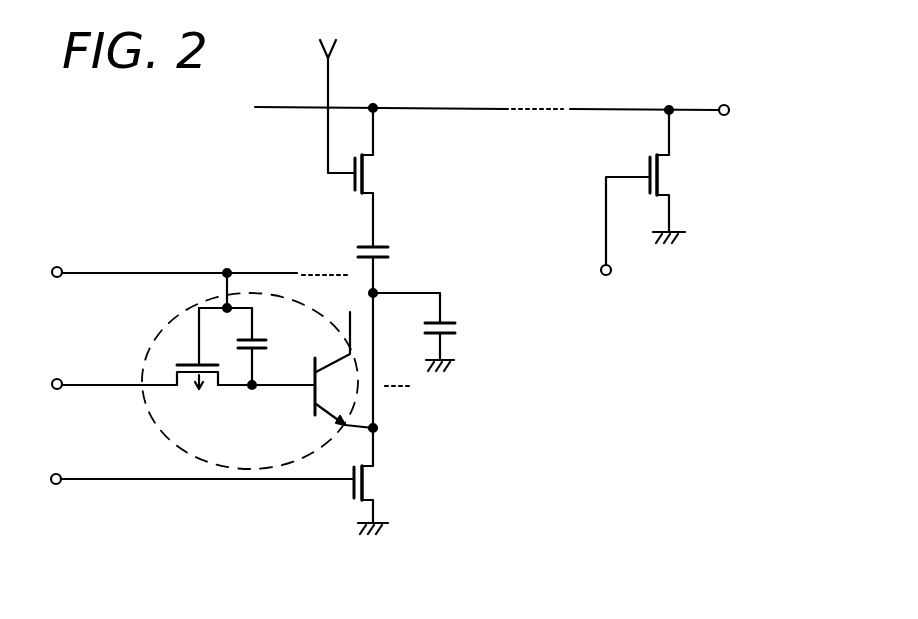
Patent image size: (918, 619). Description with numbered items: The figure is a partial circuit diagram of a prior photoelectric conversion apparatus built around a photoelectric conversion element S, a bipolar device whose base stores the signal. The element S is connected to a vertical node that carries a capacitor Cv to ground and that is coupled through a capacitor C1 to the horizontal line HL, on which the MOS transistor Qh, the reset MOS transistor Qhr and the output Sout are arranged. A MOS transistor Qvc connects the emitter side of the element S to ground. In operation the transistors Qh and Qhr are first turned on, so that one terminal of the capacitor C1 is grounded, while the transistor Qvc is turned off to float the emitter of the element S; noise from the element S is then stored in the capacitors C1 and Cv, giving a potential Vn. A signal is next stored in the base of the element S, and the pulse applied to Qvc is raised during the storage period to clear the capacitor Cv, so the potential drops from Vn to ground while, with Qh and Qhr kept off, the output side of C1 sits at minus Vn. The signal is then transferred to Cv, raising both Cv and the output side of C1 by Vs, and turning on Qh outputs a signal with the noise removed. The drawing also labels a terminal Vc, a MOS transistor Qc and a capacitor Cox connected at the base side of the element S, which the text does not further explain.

The horizontal output line HL is at (605, 107).
The MOS transistor Qh is at (382, 175).
The capacitor C1 is at (389, 266).
The capacitor Cv is at (431, 330).
The control voltage terminal Vc is at (97, 386).
The control MOS transistor Qc is at (214, 346).
The oxide capacitance Cox is at (271, 348).
The photoelectric conversion element S is at (144, 398).
The MOS transistor Qvc is at (389, 481).
The MOS transistor Qhr is at (683, 174).
The signal output terminal Sout is at (757, 112).